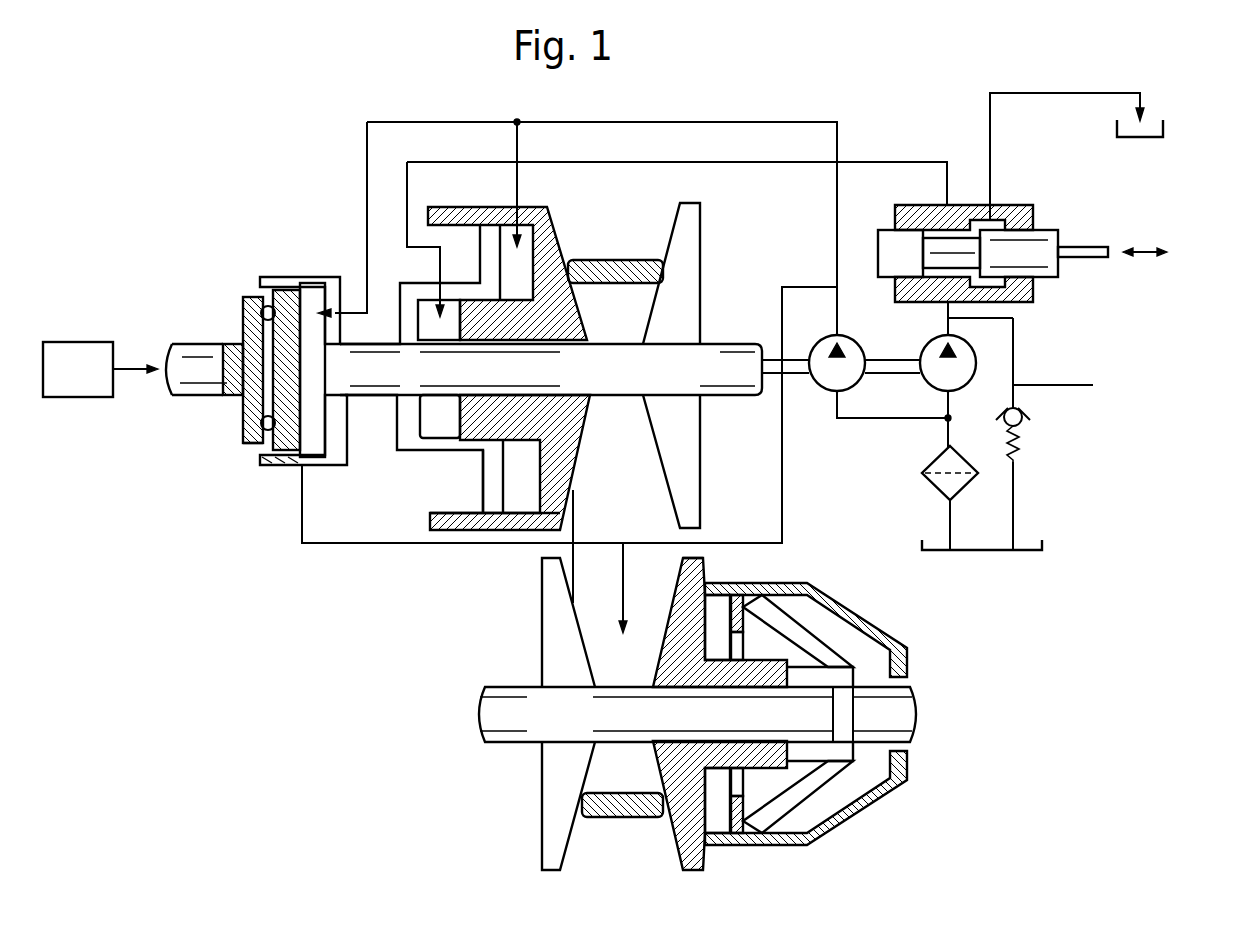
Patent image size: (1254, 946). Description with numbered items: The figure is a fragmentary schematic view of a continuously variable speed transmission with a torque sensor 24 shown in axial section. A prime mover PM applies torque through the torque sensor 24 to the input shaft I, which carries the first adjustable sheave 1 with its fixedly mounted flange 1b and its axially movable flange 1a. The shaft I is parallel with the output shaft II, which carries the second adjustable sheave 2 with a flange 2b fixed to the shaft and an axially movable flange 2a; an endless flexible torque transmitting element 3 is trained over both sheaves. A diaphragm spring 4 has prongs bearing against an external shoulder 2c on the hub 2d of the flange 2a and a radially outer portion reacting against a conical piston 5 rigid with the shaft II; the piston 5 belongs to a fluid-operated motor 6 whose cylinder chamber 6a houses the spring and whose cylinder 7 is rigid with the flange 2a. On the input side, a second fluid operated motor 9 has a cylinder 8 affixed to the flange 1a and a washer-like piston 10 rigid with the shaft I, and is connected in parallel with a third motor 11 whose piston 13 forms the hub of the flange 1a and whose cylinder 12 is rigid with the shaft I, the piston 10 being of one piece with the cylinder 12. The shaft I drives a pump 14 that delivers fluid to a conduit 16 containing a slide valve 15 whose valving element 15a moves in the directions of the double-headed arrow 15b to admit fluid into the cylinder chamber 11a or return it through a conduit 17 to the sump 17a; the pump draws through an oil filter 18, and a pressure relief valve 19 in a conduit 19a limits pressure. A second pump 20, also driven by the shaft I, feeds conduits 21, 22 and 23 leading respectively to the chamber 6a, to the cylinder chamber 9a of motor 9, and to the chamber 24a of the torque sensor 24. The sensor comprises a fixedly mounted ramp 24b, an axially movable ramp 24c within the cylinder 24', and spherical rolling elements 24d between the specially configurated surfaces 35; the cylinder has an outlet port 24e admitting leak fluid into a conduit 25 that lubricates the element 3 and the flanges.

The first adjustable sheave 1 is at (528, 528).
The axially movable flange 1a is at (461, 393).
The fixedly mounted flange 1b is at (685, 302).
The second adjustable sheave 2 is at (726, 707).
The axially movable flange 2a is at (711, 709).
The flange 2b is at (548, 803).
The external shoulder 2c is at (738, 660).
The hub of secondary pulley 2d is at (788, 677).
The endless flexible torque transmitting element 3 is at (633, 257).
The diaphragm spring 4 is at (740, 832).
The conical piston 5 is at (817, 647).
The fluid-operated motor 6 is at (767, 798).
The cylinder chamber 6a is at (680, 590).
The cylinder 7 is at (790, 577).
The cylinder 8 is at (497, 528).
The second fluid operated motor 9 is at (527, 488).
The cylinder chamber 9a is at (512, 257).
The washer-like piston 10 is at (490, 490).
The third fluid operated motor 11 is at (452, 435).
The cylinder chamber 11a is at (432, 320).
The cylinder 12 is at (407, 443).
The piston 13 is at (467, 430).
The pump 14 is at (983, 363).
The slide valve 15 is at (1044, 251).
The valving element 15a is at (1058, 230).
The double-headed arrow 15b is at (1147, 250).
The conduit 16 is at (877, 160).
The conduit 17 is at (1032, 93).
The sump 17a is at (1165, 122).
The oil filter 18 is at (925, 477).
The pressure relief valve 19 is at (1027, 413).
The conduit 19a is at (1077, 363).
The pump 20 is at (825, 385).
The conduit 21 is at (785, 485).
The conduit 22 is at (783, 120).
The conduit 23 is at (402, 120).
The torque sensor 24 is at (253, 373).
The cylinder 24' is at (298, 342).
The cylinder chamber 24a is at (317, 437).
The fixedly mounted ramp 24b is at (243, 443).
The axially movable ramp 24c is at (288, 443).
The spherical rolling elements 24d is at (257, 300).
The outlet port 24e is at (297, 463).
The conduit 25 is at (300, 540).
The specially configurated surfaces 35 is at (247, 340).
The prime mover PM is at (77, 388).
The shaft I is at (187, 383).
The shaft II is at (502, 730).